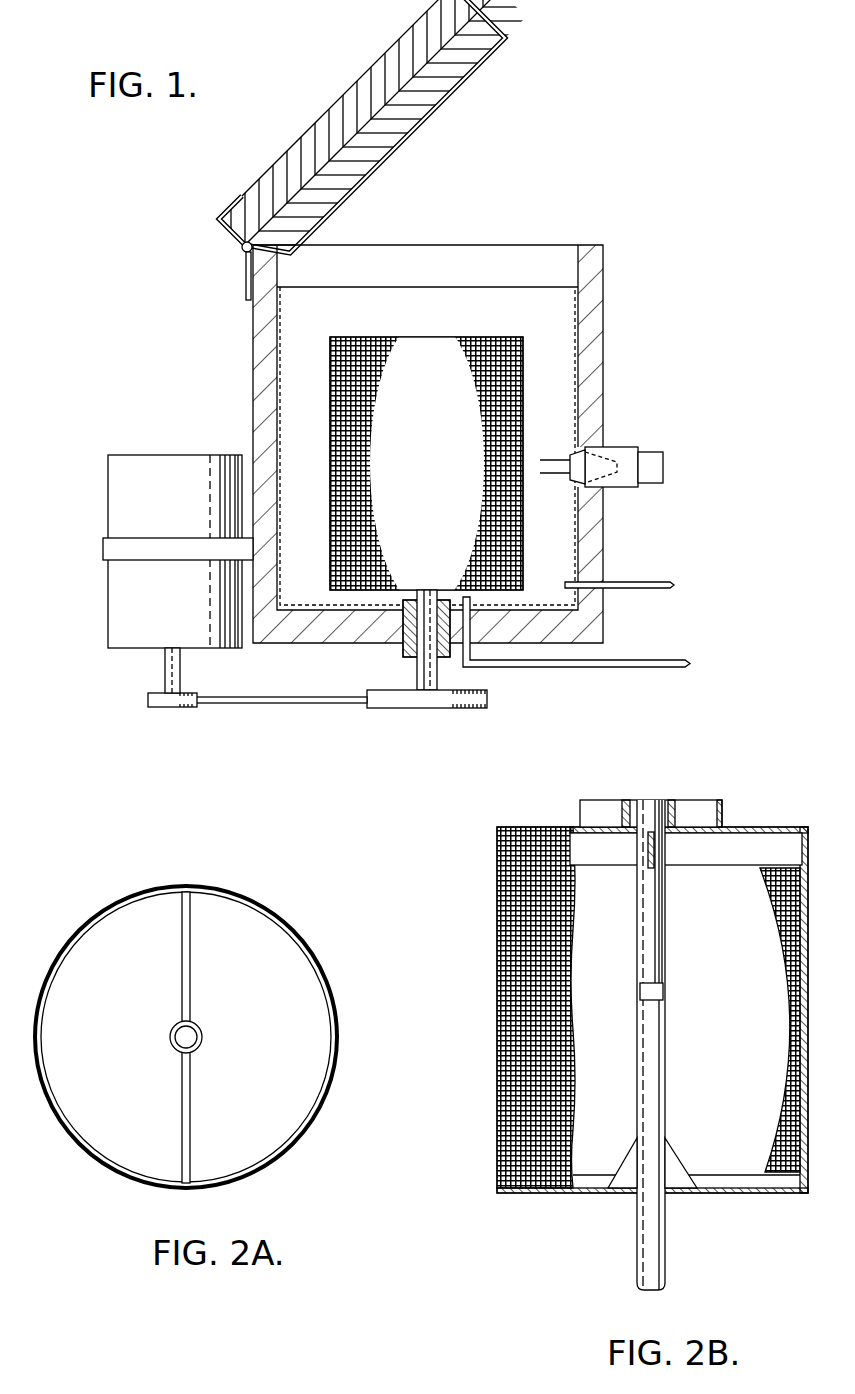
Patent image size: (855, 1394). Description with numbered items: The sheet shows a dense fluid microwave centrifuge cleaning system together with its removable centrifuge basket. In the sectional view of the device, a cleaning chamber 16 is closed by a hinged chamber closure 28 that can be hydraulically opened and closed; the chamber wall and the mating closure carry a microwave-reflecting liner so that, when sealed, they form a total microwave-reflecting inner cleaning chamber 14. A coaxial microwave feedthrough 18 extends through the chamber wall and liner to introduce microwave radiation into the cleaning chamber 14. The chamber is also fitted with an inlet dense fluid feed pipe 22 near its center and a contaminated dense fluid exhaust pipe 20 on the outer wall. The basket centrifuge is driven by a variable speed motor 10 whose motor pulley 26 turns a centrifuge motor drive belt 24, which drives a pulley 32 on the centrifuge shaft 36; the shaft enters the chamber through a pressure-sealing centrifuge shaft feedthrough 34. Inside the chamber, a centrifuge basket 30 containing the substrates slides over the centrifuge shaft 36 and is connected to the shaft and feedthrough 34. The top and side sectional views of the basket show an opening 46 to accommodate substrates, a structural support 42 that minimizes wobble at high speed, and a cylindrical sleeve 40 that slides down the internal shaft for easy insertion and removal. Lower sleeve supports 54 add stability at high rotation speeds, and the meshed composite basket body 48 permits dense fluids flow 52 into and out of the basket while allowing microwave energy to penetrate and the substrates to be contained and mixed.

In FIG. 1, the variable speed motor 10 is at (108, 498).
In FIG. 1, the inner cleaning chamber 14 is at (413, 315).
In FIG. 1, the cleaning chamber 16 is at (603, 343).
In FIG. 1, the coaxial microwave feedthrough 18 is at (623, 447).
In FIG. 1, the contaminated dense fluid exhaust pipe 20 is at (632, 582).
In FIG. 1, the inlet dense fluid feed pipe 22 is at (632, 670).
In FIG. 1, the centrifuge motor drive belt 24 is at (285, 705).
In FIG. 1, the motor pulley 26 is at (165, 708).
In FIG. 1, the hinged chamber closure 28 is at (352, 90).
In FIG. 1, the centrifuge basket 30 is at (330, 393).
In FIG. 1, the pulley 32 is at (445, 708).
In FIG. 1, the pressure-sealing centrifuge shaft feedthrough 34 is at (403, 652).
In FIG. 1, the centrifuge shaft 36 is at (437, 675).
In FIG. 2B, the centrifuge shaft 36 is at (645, 1225).
In FIG. 2A, the cylindrical sleeve 40 is at (200, 1047).
In FIG. 2B, the cylindrical sleeve 40 is at (660, 950).
In FIG. 2A, the structural support 42 is at (190, 935).
In FIG. 2B, the structural support 42 is at (655, 850).
In FIG. 2A, the opening 46 is at (268, 1013).
In FIG. 2B, the basket body 48 is at (500, 892).
In FIG. 2B, the dense fluids flow 52 is at (747, 1082).
In FIG. 2B, the lower sleeve supports 54 is at (685, 1180).